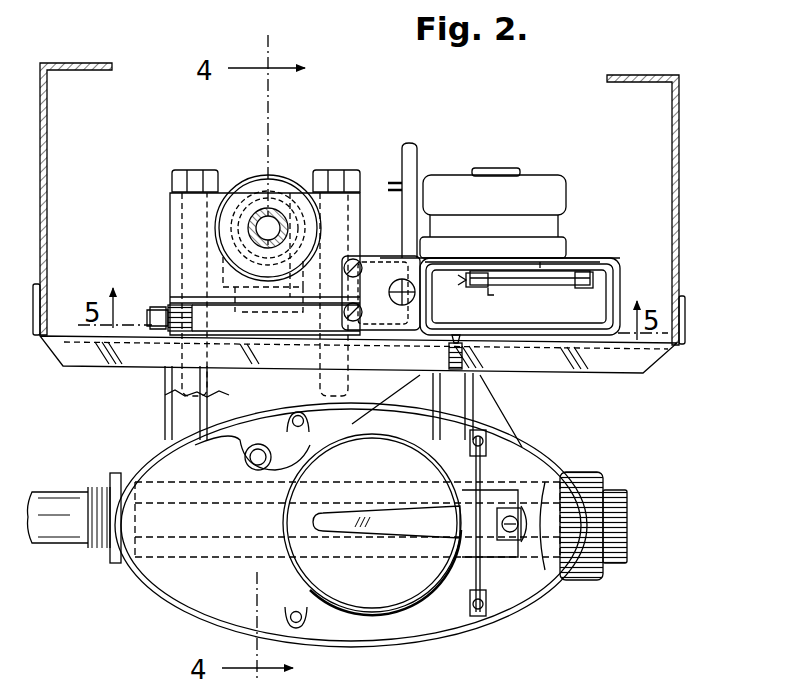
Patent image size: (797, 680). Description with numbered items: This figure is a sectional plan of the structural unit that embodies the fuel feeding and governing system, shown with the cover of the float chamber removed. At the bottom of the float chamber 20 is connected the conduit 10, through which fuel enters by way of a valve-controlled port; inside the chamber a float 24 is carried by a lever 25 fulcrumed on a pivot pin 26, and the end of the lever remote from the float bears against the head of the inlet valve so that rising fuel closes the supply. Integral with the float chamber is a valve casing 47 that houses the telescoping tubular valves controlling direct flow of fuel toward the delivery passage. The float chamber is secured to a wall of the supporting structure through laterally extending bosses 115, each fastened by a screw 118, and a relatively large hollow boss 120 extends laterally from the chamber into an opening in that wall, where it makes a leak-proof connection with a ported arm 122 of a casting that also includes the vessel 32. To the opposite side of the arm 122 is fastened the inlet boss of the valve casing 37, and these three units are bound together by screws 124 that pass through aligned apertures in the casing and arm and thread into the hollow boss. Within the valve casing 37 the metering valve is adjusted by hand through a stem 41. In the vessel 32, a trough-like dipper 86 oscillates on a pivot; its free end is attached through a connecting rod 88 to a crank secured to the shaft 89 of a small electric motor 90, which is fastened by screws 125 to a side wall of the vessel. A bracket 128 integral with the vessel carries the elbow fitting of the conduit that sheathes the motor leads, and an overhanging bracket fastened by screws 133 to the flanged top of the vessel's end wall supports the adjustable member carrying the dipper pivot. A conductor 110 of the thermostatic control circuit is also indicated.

The conduit 10 is at (70, 525).
The float chamber 20 is at (538, 460).
The float 24 is at (372, 524).
The lever 25 is at (386, 522).
The pivot pin 26 is at (482, 482).
The vessel 32 is at (618, 294).
The valve casing 37 is at (303, 192).
The stem 41 is at (262, 212).
The valve casing 47 is at (243, 463).
The dipper 86 is at (608, 284).
The connecting rod 88 is at (538, 284).
The shaft 89 is at (490, 290).
The electric motor 90 is at (560, 195).
The conductor 110 is at (388, 186).
The bosses 115 is at (165, 430).
The screw 118 is at (458, 342).
The hollow boss 120 is at (265, 294).
The ported arm 122 is at (198, 300).
The screws 124 is at (195, 180).
The screws 125 is at (570, 270).
The bracket 128 is at (415, 166).
The screws 133 is at (355, 304).